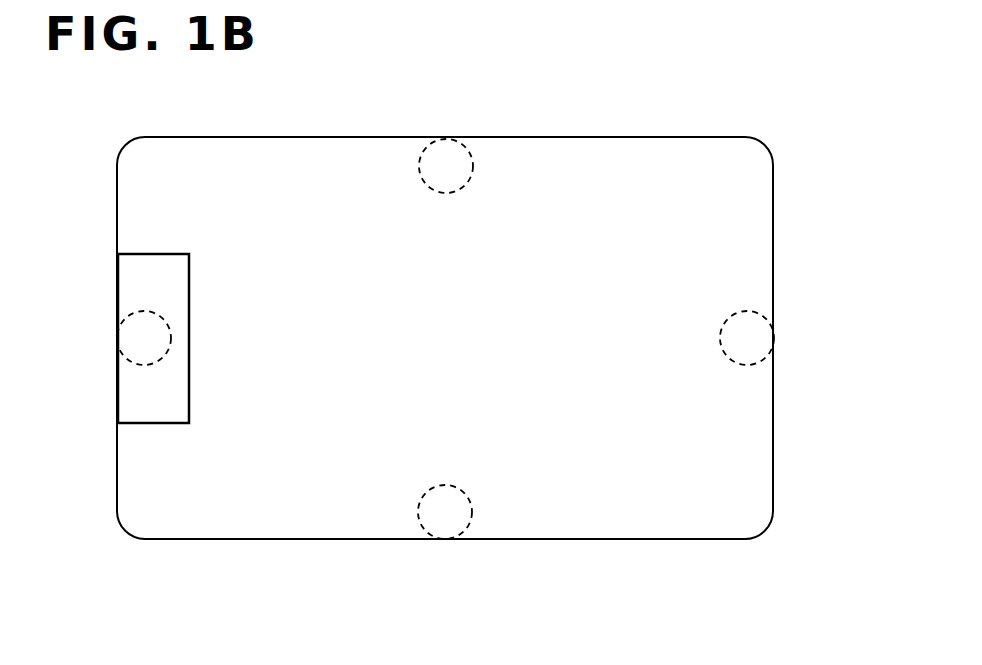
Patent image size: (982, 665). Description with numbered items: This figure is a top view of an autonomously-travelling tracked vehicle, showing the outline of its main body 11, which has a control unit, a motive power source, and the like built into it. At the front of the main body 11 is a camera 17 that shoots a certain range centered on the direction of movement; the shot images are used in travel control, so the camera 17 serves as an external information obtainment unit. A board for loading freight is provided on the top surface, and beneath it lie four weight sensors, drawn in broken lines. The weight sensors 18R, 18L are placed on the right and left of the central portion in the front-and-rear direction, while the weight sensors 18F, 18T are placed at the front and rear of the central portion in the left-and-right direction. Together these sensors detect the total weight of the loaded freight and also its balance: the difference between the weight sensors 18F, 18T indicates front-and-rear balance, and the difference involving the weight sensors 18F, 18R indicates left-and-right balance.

The main body 11 is at (622, 137).
The camera 17 is at (116, 282).
The weight sensor 18R is at (450, 137).
The weight sensor 18T is at (775, 341).
The weight sensor 18F is at (116, 333).
The weight sensor 18L is at (440, 540).